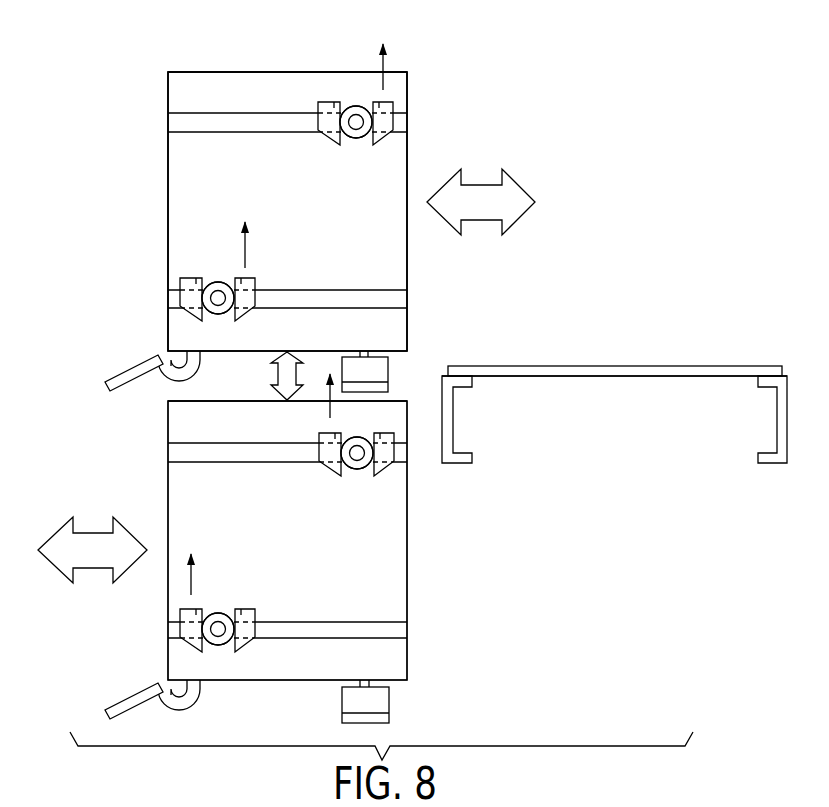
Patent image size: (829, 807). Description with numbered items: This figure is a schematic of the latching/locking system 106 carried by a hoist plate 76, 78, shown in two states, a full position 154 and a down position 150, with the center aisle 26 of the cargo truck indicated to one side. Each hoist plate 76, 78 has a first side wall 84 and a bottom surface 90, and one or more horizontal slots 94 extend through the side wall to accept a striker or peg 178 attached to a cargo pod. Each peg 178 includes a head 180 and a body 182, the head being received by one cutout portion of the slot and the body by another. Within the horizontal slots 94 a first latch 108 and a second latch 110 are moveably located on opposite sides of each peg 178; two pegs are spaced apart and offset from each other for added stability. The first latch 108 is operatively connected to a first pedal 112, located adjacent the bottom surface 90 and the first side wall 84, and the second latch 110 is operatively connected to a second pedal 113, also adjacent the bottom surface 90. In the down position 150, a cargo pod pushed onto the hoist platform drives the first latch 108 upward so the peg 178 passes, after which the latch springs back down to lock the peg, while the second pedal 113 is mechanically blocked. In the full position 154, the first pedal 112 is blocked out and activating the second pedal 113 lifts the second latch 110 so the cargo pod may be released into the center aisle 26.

The center aisle 26 is at (617, 365).
The hoist plate 76 is at (202, 88).
The hoist plate 78 is at (183, 424).
The first side wall 84 is at (168, 163).
The bottom surface 90 is at (262, 352).
The horizontal slot 94 is at (177, 120).
The latching/locking system 106 is at (447, 56).
The first latch 108 is at (323, 102).
The second latch 110 is at (390, 107).
The first pedal 112 is at (118, 372).
The second pedal 113 is at (373, 370).
The down position 150 is at (88, 608).
The full position 154 is at (90, 160).
The striker or peg 178 is at (360, 106).
The head 180 is at (358, 128).
The body 182 is at (353, 134).